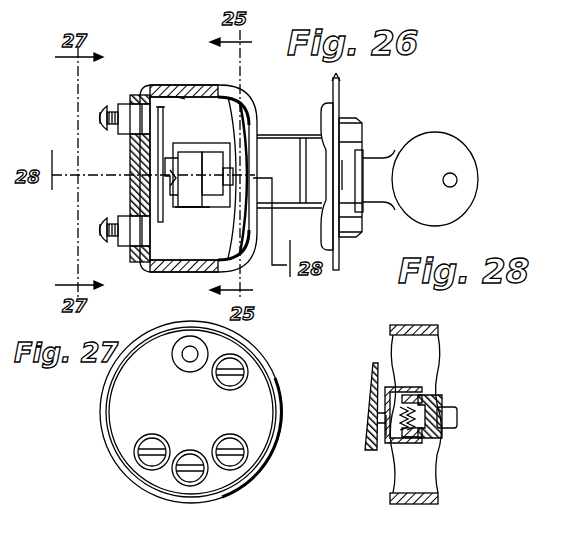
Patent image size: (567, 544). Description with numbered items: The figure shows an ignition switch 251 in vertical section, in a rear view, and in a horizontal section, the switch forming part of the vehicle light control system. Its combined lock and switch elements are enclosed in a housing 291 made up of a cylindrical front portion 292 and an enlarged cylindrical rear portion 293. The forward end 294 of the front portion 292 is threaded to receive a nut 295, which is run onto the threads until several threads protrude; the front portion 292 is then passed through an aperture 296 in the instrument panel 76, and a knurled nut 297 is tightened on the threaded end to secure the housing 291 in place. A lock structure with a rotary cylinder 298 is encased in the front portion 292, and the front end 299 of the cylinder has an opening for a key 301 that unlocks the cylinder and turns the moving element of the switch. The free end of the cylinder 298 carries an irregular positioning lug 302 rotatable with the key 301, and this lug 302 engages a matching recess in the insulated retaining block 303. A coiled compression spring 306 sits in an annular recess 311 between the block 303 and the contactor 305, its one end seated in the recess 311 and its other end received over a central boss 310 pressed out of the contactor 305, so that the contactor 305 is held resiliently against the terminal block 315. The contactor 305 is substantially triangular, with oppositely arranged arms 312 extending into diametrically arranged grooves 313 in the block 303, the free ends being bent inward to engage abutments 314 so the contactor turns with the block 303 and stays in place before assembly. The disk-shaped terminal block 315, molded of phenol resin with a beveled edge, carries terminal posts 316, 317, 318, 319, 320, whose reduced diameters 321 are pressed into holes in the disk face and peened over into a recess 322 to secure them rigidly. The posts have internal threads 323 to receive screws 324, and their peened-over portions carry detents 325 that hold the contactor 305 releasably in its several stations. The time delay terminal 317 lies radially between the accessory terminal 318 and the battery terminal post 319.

In FIG. 26, the instrument panel 76 is at (338, 265).
In FIG. 28, the instrument panel 76 is at (415, 414).
In FIG. 26, the ignition switch 251 is at (250, 98).
In FIG. 27, the ignition switch 251 is at (258, 358).
In FIG. 26, the housing 291 is at (258, 120).
In FIG. 26, the cylindrical front portion 292 is at (263, 135).
In FIG. 26, the enlarged cylindrical rear portion 293 is at (176, 268).
In FIG. 26, the forward end 294 is at (350, 138).
In FIG. 26, the nut 295 is at (327, 104).
In FIG. 26, the aperture 296 is at (345, 160).
In FIG. 26, the knurled nut 297 is at (354, 217).
In FIG. 26, the rotary cylinder 298 is at (225, 145).
In FIG. 28, the rotary cylinder 298 is at (458, 415).
In FIG. 26, the front end 299 is at (363, 180).
In FIG. 26, the key 301 is at (470, 158).
In FIG. 26, the positioning lug 302 is at (222, 152).
In FIG. 26, the insulated retaining block 303 is at (190, 207).
In FIG. 28, the insulated retaining block 303 is at (446, 400).
In FIG. 26, the contactor 305 is at (168, 96).
In FIG. 28, the coiled compression spring 306 is at (386, 442).
In FIG. 28, the central boss 310 is at (372, 425).
In FIG. 28, the annular recess 311 is at (396, 387).
In FIG. 28, the arms 312 is at (418, 394).
In FIG. 28, the grooves 313 is at (443, 398).
In FIG. 28, the abutments 314 is at (420, 445).
In FIG. 26, the terminal block 315 is at (131, 165).
In FIG. 28, the terminal block 315 is at (368, 397).
In FIG. 27, the terminal post 316 is at (252, 470).
In FIG. 27, the time delay terminal 317 is at (182, 490).
In FIG. 27, the accessory terminal 318 is at (136, 448).
In FIG. 27, the battery terminal post 319 is at (175, 350).
In FIG. 27, the terminal post 320 is at (235, 392).
In FIG. 26, the reduced diameters 321 is at (136, 103).
In FIG. 26, the recess 322 is at (142, 262).
In FIG. 26, the internal threads 323 is at (132, 215).
In FIG. 26, the screws 324 is at (96, 118).
In FIG. 27, the detents 325 is at (188, 347).